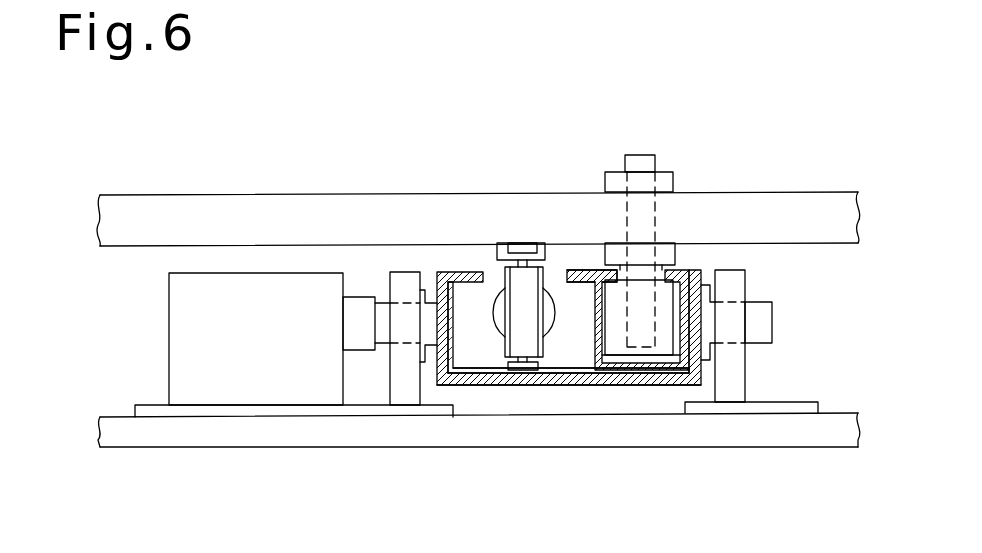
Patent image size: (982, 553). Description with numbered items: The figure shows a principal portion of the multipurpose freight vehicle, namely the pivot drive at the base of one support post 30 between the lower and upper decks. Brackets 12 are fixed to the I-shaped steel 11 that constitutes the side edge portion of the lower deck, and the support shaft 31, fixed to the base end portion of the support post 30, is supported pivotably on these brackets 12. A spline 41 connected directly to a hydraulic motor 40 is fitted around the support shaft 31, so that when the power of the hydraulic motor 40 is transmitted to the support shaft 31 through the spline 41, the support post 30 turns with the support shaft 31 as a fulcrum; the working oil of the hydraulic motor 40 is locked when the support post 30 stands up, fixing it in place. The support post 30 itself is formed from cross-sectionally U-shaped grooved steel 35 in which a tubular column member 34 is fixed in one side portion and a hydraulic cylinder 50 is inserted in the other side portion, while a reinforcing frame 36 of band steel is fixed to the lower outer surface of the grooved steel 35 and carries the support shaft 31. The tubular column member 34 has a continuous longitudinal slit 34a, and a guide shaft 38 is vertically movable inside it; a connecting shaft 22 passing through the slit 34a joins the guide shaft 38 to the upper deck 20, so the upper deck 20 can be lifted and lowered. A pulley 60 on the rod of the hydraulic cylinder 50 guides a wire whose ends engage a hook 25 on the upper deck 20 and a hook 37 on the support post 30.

The I-shaped steel 11 is at (235, 432).
The bracket 12 is at (407, 375).
The upper deck 20 is at (797, 198).
The connecting shaft 22 is at (642, 158).
The hook 25 is at (523, 253).
The support post 30 is at (563, 388).
The support shaft 31 is at (385, 298).
The tubular column member 34 is at (593, 313).
The slit 34a is at (662, 275).
The grooved steel 35 is at (472, 380).
The reinforcing frame 36 is at (505, 380).
The hook 37 is at (523, 383).
The guide shaft 38 is at (667, 347).
The hydraulic motor 40 is at (207, 328).
The spline 41 is at (362, 312).
The hydraulic cylinder 50 is at (563, 275).
The pulley 60 is at (500, 274).